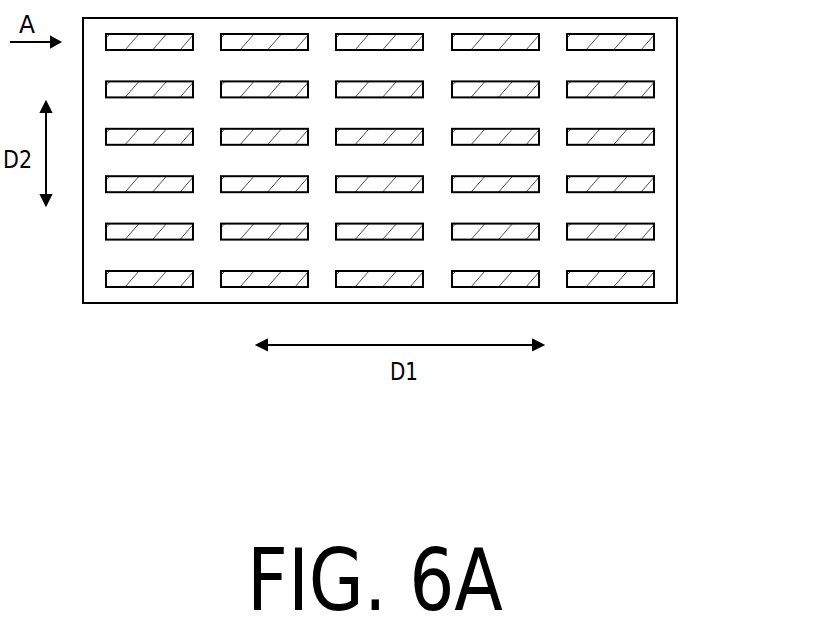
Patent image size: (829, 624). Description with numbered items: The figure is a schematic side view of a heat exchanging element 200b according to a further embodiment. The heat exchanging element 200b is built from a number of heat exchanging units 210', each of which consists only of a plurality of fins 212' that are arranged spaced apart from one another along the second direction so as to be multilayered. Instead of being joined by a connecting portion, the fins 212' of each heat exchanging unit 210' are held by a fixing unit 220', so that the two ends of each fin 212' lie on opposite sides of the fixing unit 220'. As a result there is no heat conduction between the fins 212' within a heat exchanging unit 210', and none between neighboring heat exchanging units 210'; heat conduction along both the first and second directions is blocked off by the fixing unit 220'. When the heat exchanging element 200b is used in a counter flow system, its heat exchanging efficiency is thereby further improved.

The heat exchanging element 200b is at (407, 228).
The heat exchanging unit 210' is at (380, 211).
The fin 212' is at (332, 160).
The fixing unit 220' is at (444, 160).